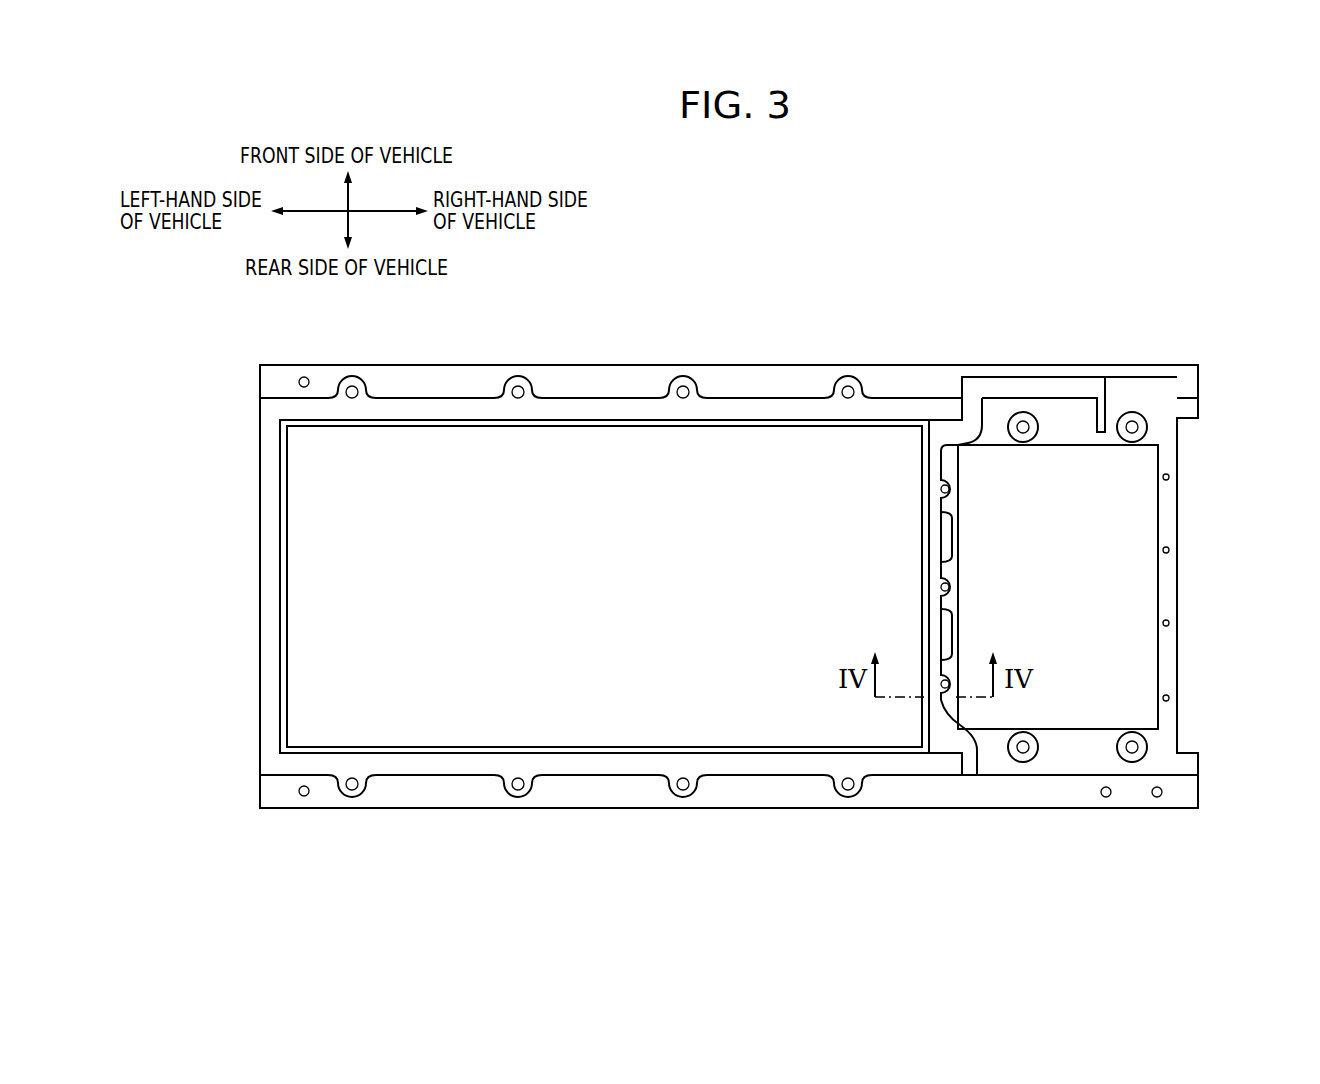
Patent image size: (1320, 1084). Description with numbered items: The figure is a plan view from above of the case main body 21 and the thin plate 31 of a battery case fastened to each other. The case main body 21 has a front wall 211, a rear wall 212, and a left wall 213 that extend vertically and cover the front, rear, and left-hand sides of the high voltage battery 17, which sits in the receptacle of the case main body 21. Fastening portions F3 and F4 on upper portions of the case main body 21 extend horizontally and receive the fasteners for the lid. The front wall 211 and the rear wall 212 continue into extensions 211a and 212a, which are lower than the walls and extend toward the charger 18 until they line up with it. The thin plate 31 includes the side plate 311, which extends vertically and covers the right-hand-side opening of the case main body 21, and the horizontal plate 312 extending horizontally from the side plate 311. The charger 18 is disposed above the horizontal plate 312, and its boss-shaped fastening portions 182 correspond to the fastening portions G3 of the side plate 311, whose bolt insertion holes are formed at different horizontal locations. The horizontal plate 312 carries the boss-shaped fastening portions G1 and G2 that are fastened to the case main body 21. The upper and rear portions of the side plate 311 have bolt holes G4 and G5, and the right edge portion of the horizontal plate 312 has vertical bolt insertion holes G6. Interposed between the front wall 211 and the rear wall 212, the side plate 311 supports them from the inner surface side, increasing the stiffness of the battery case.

The case main body 21 is at (250, 396).
The high voltage battery 17 is at (318, 537).
The left wall 213 is at (270, 577).
The front wall 211 is at (588, 408).
The rear wall 212 is at (607, 767).
The extension 211a is at (1190, 408).
The extension 212a is at (1190, 766).
The thin plate 31 is at (1177, 377).
The side plate 311 is at (936, 458).
The horizontal plate 312 is at (1168, 587).
The charger 18 is at (1113, 528).
The fastening portion 182 is at (956, 533).
The fastening portion F3 is at (841, 376).
The fastening portion F4 is at (840, 798).
The fastening portion G1 is at (1026, 413).
The fastening portion G2 is at (1025, 762).
The fastening portion G3 is at (947, 537).
The bolt hole G4 is at (949, 486).
The bolt hole G5 is at (970, 770).
The bolt insertion hole G6 is at (1170, 697).